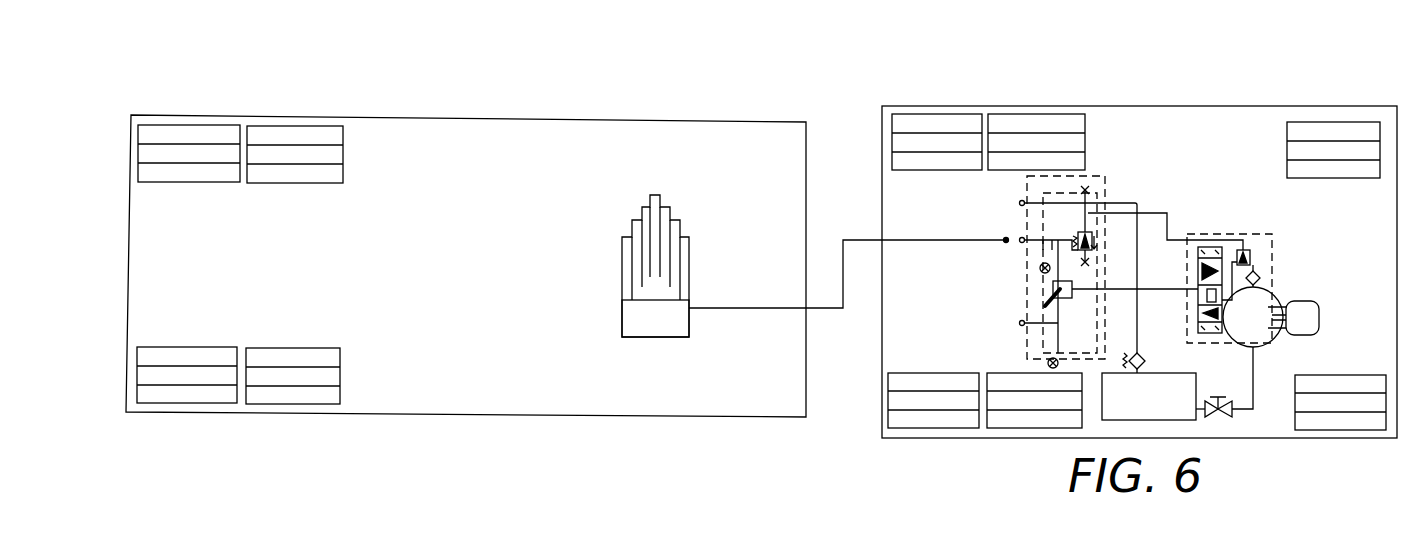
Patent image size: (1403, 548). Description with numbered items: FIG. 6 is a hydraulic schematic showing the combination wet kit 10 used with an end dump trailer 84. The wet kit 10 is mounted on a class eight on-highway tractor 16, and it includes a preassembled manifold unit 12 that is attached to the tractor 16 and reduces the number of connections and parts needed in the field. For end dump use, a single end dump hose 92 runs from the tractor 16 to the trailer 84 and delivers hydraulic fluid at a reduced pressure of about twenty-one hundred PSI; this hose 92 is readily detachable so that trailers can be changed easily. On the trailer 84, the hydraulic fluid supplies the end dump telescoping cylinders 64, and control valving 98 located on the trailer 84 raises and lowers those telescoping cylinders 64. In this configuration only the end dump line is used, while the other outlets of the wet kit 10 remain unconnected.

The wet kit 10 is at (1170, 229).
The manifold unit 12 is at (1107, 180).
The tractor 16 is at (1220, 113).
The telescoping cylinders 64 is at (653, 194).
The end dump trailer 84 is at (509, 118).
The end dump hose 92 is at (852, 238).
The control valving 98 is at (685, 327).